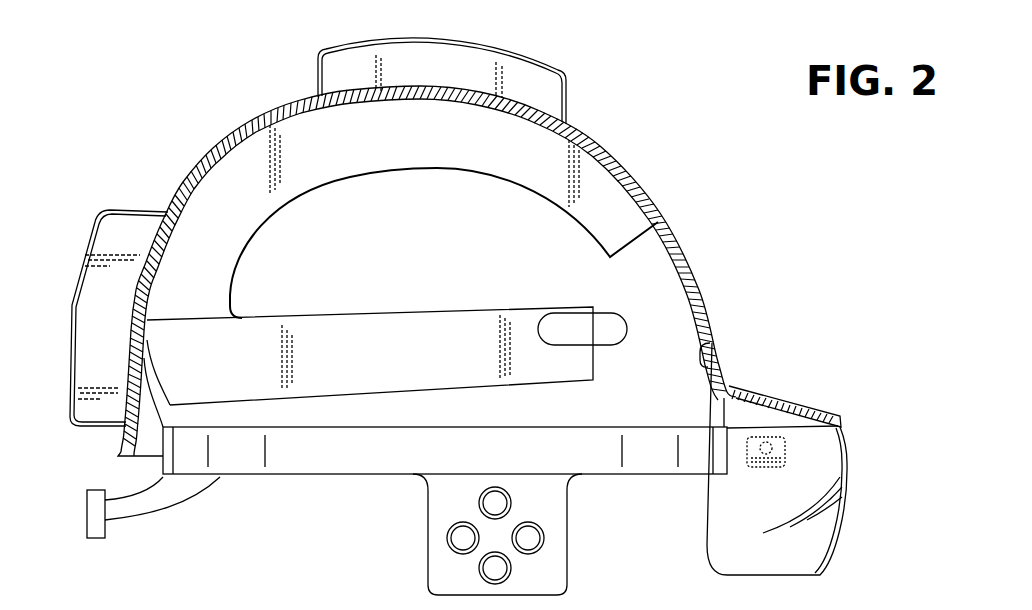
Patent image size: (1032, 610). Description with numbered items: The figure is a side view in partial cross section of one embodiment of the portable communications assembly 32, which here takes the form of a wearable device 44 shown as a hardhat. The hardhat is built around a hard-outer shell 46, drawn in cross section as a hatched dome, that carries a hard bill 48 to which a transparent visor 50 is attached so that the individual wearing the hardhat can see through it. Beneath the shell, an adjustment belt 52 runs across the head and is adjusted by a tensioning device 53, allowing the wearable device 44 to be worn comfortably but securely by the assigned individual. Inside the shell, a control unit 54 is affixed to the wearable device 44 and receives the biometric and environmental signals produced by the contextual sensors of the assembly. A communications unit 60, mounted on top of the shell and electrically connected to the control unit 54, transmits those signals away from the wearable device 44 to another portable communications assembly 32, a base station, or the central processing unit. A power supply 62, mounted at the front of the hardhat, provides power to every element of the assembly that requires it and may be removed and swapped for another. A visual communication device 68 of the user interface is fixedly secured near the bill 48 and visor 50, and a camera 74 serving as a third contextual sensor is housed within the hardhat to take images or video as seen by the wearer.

The portable communications assembly 32 is at (178, 125).
The wearable device 44 is at (700, 268).
The hard-outer shell 46 is at (723, 347).
The hard bill 48 is at (790, 402).
The visor 50 is at (810, 576).
The adjustment belt 52 is at (630, 476).
The tensioning device 53 is at (87, 512).
The control unit 54 is at (618, 210).
The communications unit 60 is at (493, 48).
The power supply 62 is at (128, 210).
The visual communication device 68 is at (785, 453).
The camera 74 is at (625, 340).